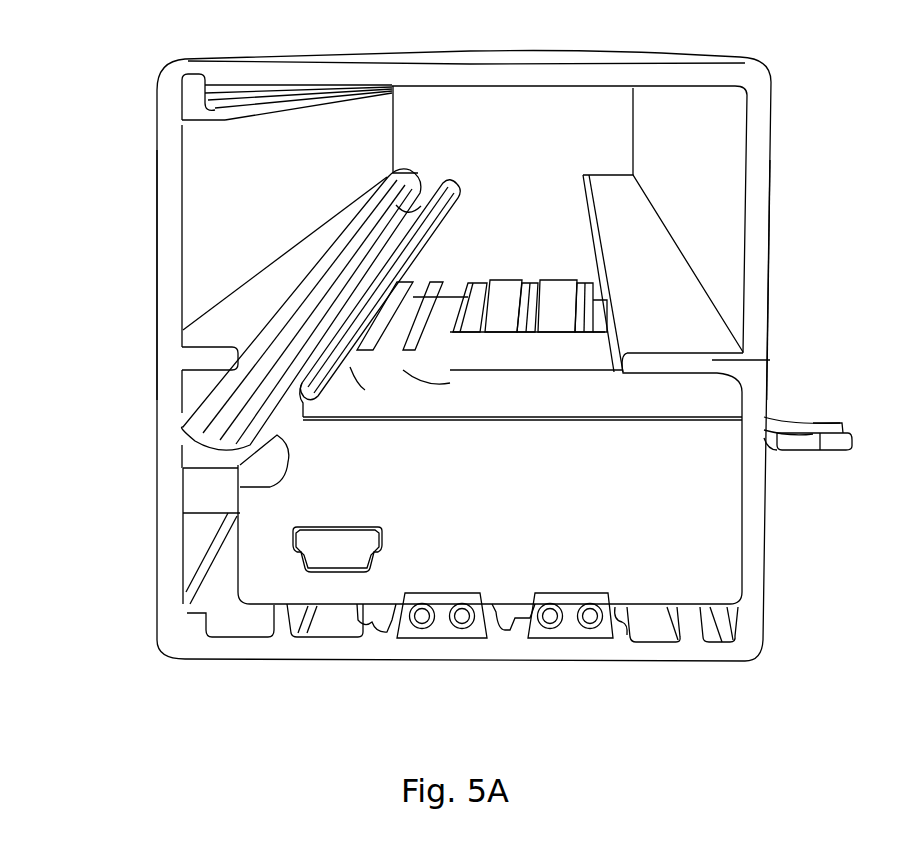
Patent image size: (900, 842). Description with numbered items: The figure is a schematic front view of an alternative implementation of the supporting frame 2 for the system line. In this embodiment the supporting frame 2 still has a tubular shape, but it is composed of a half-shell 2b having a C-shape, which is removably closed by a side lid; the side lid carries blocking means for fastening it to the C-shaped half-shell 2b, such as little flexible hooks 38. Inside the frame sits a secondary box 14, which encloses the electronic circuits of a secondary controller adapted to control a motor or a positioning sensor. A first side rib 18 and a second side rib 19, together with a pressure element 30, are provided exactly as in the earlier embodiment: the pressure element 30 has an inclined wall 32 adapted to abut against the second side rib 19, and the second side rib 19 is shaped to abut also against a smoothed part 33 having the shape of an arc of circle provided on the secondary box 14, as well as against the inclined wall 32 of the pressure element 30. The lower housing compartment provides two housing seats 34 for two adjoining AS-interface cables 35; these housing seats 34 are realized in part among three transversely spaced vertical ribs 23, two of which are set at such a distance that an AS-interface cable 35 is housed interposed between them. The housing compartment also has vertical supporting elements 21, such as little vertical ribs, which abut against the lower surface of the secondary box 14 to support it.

The supporting frame 2 is at (698, 57).
The half-shell 2b is at (157, 150).
The flexible hooks 38 is at (183, 76).
The inclined wall 32 is at (345, 382).
The second side rib 19 is at (187, 417).
The pressure element 30 is at (583, 385).
The first side rib 18 is at (755, 360).
The secondary box 14 is at (260, 514).
The smoothed part 33 is at (258, 488).
The vertical supporting elements 21 is at (270, 650).
The vertical ribs 23 is at (368, 640).
The AS-interface cables 35 is at (407, 640).
The housing seats 34 is at (437, 612).